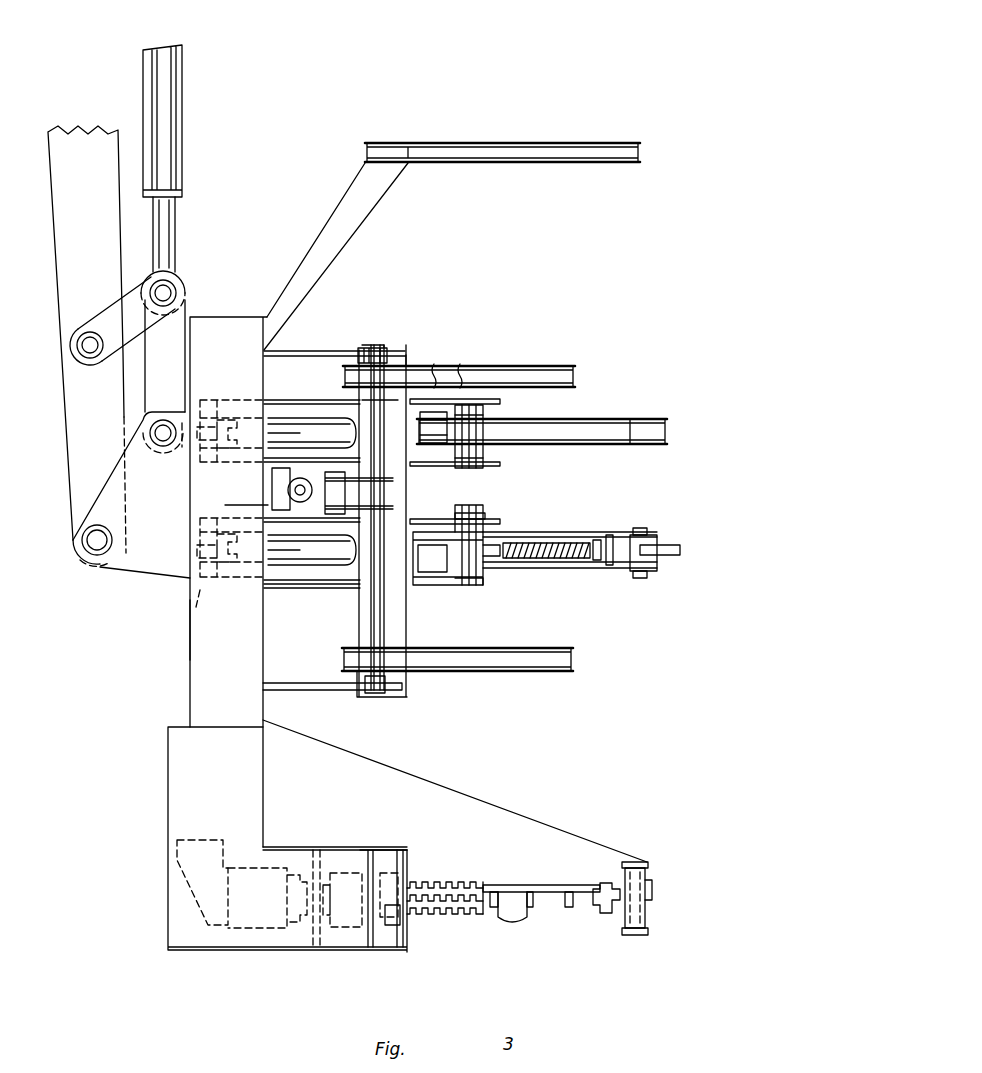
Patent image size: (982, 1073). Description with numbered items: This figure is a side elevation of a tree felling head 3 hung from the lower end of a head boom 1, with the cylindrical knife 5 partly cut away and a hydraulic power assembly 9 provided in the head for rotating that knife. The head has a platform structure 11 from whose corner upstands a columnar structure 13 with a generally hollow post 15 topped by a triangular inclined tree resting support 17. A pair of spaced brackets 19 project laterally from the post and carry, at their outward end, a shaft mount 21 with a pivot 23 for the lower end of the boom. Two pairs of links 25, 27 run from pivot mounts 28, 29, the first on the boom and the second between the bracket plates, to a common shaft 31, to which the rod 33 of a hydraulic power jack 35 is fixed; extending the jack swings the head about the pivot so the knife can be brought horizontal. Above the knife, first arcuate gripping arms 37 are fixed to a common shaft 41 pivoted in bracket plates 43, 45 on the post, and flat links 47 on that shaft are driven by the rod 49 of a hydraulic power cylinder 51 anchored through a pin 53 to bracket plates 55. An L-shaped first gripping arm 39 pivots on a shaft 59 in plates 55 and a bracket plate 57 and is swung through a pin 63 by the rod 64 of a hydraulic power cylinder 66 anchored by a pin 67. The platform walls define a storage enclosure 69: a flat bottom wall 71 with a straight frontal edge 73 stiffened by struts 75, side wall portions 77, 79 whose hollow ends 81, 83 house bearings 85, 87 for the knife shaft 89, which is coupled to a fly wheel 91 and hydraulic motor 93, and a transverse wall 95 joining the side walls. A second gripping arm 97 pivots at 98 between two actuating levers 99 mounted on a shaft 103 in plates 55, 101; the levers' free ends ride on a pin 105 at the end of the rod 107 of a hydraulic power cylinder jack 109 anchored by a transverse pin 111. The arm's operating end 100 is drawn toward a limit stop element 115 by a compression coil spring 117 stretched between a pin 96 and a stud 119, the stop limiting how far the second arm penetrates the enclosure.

The head boom 1 is at (62, 248).
The tree felling head 3 is at (581, 315).
The cylindrical knife 5 is at (455, 875).
The hydraulic power assembly 9 is at (225, 948).
The platform structure 11 is at (178, 804).
The columnar structure 13 is at (198, 686).
The post 15 is at (195, 633).
The tree resting support 17 is at (551, 142).
The brackets 19 is at (146, 575).
The shaft mount 21 is at (80, 547).
The pivot 23 is at (95, 566).
The links 25 is at (106, 318).
The links 27 is at (176, 375).
The pivot mount 28 is at (75, 347).
The pivot mount 29 is at (163, 448).
The shaft 31 is at (178, 288).
The rod 33 is at (180, 232).
The hydraulic power jack 35 is at (185, 134).
The first arcuate gripping arms 37 is at (570, 364).
The first gripping arm 39 is at (611, 428).
The common shaft 41 is at (395, 626).
The bracket plate 43 is at (290, 692).
The bracket plate 45 is at (311, 354).
The flat links 47 is at (395, 506).
The rod 49 is at (386, 432).
The hydraulic power cylinder 51 is at (228, 505).
The pin 53 is at (287, 494).
The bracket plates 55 is at (500, 466).
The bracket plate 57 is at (305, 397).
The shaft 59 is at (486, 455).
The pin 63 is at (463, 372).
The rod 64 is at (438, 370).
The hydraulic power cylinder 66 is at (318, 416).
The pin 67 is at (213, 398).
The storage enclosure 69 is at (332, 803).
The bottom wall 71 is at (526, 886).
The frontal edge 73 is at (549, 900).
The struts 75 is at (506, 917).
The side wall portion 77 is at (405, 858).
The side wall portion 79 is at (607, 882).
The hollow end 81 is at (389, 942).
The hollow end 83 is at (637, 935).
The bearing 85 is at (406, 924).
The bearing 87 is at (650, 908).
The shaft 89 is at (405, 882).
The fly wheel 91 is at (342, 940).
The hydraulic motor 93 is at (272, 950).
The transverse wall 95 is at (523, 814).
The pin 96 is at (598, 538).
The second gripping arm 97 is at (665, 546).
The pivot 98 is at (638, 533).
The actuating levers 99 is at (648, 528).
The operating end 100 is at (611, 533).
The plate 101 is at (478, 588).
The shaft 103 is at (487, 515).
The pin 105 is at (432, 537).
The rod 107 is at (370, 580).
The hydraulic power cylinder jack 109 is at (319, 568).
The transverse pin 111 is at (195, 605).
The limit stop element 115 is at (609, 570).
The compression coil spring 117 is at (564, 540).
The stud 119 is at (498, 560).